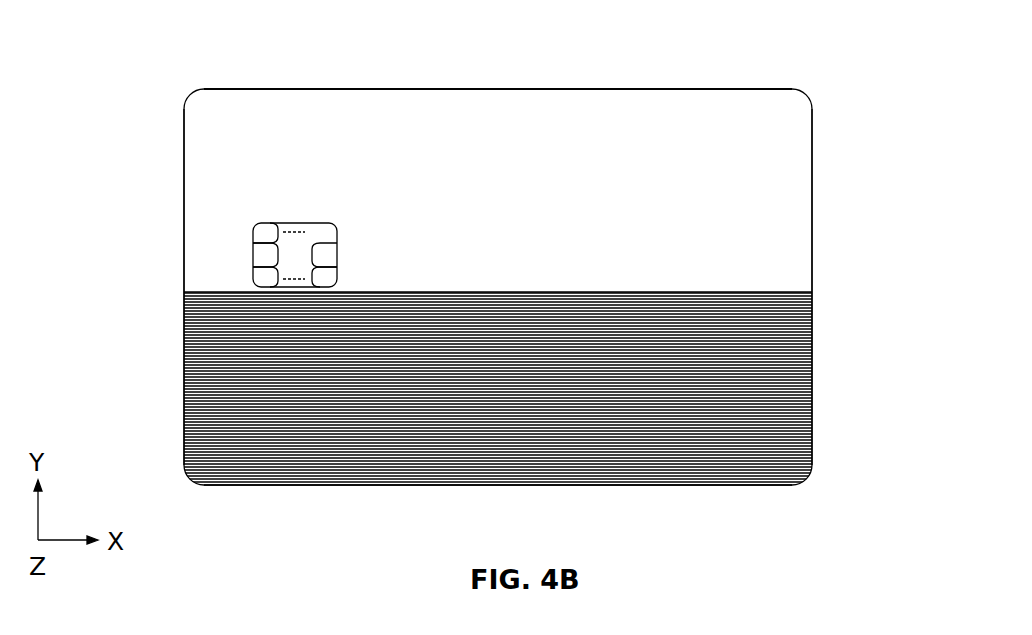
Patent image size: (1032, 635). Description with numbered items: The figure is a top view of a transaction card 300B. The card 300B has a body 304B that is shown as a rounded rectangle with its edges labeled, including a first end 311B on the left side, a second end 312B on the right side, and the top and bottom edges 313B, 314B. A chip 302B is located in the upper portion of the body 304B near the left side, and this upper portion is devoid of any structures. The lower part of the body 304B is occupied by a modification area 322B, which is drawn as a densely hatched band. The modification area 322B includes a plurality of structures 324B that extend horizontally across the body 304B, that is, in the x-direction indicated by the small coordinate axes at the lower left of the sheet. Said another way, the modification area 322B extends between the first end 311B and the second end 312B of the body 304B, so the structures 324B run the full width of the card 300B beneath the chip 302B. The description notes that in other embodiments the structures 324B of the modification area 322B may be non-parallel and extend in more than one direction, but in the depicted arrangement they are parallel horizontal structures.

The card 300B is at (133, 92).
The chip 302B is at (320, 223).
The body 304B is at (218, 89).
The first end 311B is at (183, 258).
The second end 312B is at (813, 163).
The top edge 313B is at (462, 89).
The bottom edge 314B is at (305, 487).
The modification area 322B is at (681, 462).
The structures 324B is at (762, 305).